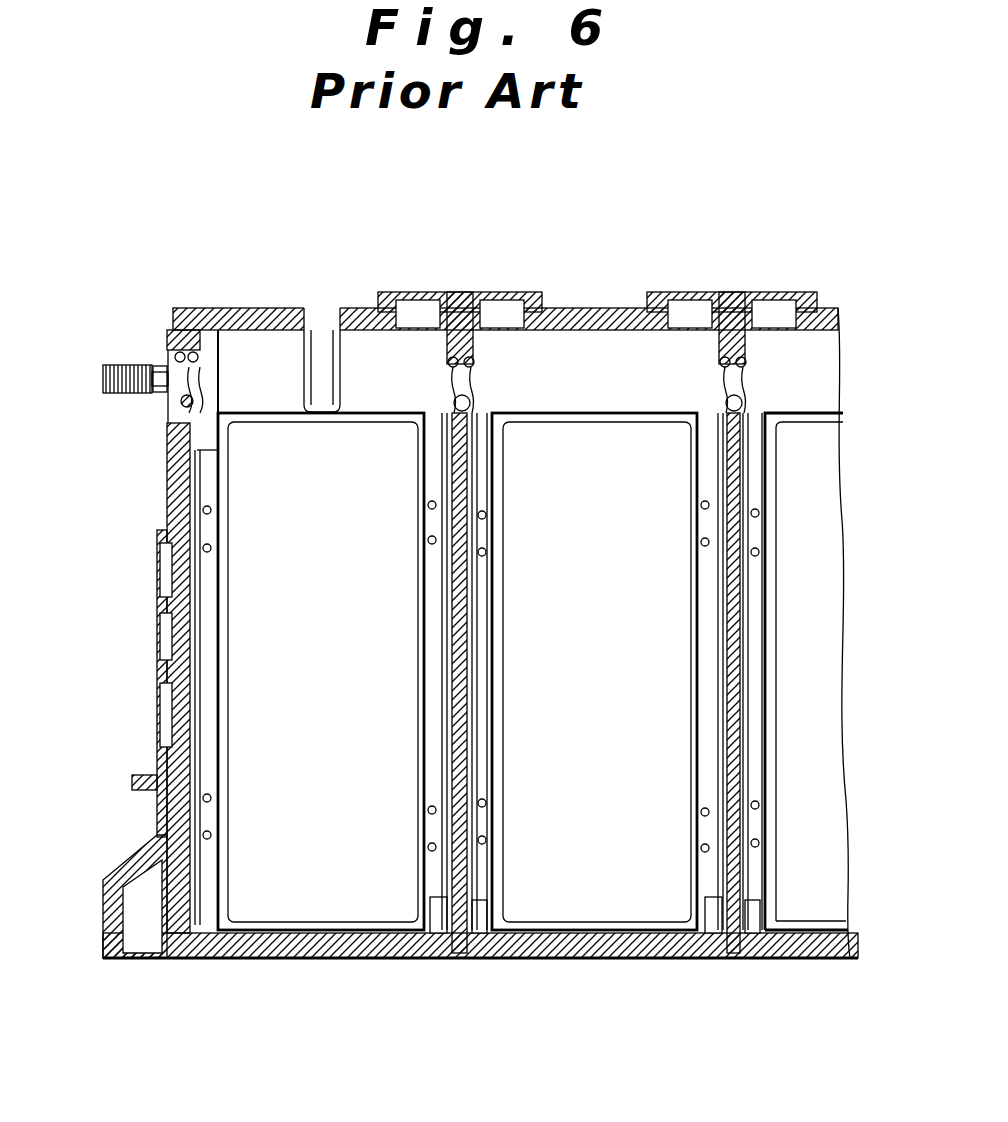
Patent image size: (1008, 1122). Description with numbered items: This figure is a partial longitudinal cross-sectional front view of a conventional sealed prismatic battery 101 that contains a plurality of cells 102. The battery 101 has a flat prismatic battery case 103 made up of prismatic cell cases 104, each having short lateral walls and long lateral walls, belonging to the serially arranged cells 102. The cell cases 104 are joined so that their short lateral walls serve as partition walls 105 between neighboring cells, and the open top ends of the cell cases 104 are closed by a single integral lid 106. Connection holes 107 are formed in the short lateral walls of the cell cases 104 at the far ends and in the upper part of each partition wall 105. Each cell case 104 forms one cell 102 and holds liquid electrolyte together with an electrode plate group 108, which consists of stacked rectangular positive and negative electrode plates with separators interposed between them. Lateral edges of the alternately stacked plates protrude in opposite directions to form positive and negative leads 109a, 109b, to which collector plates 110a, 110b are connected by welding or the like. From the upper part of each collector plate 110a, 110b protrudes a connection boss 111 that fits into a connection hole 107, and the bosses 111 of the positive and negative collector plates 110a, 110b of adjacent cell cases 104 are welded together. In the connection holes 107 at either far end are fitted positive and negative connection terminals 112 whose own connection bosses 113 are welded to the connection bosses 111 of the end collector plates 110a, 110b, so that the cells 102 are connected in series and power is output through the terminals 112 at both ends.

The sealed prismatic battery 101 is at (180, 283).
The cell 102 is at (192, 958).
The battery case 103 is at (150, 640).
The cell case 104 is at (292, 398).
The partition wall 105 is at (460, 462).
The lid 106 is at (250, 316).
The connection hole 107 is at (188, 408).
The electrode plate group 108 is at (325, 605).
The positive lead 109a is at (480, 622).
The negative lead 109b is at (432, 632).
The positive collector plate 110a is at (172, 712).
The negative collector plate 110b is at (447, 667).
The connection boss 111 is at (203, 365).
The connection terminal 112 is at (135, 362).
The connection boss of connection terminal 113 is at (153, 410).